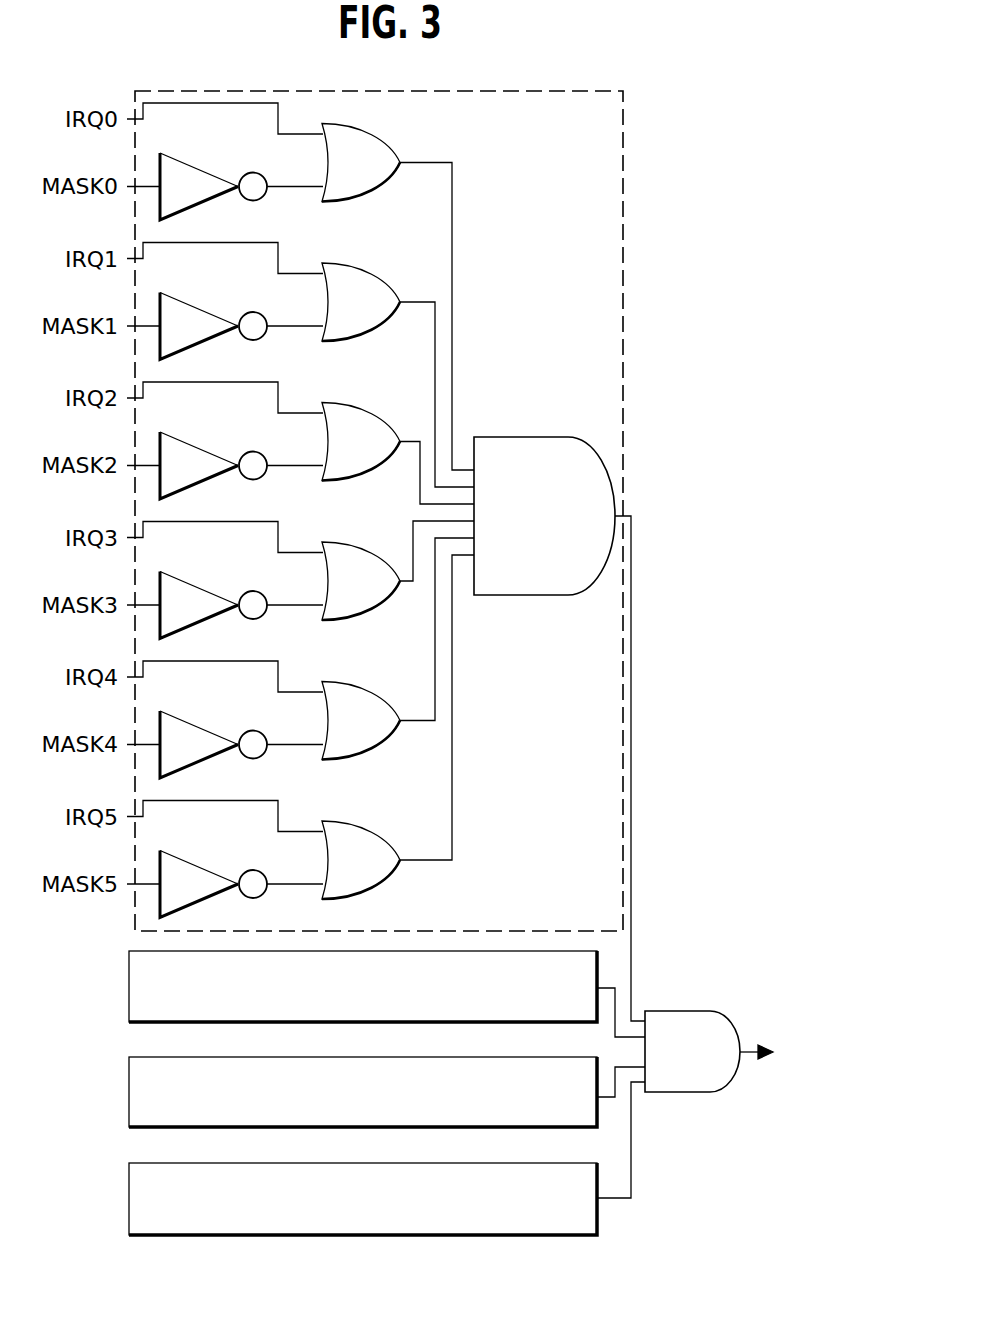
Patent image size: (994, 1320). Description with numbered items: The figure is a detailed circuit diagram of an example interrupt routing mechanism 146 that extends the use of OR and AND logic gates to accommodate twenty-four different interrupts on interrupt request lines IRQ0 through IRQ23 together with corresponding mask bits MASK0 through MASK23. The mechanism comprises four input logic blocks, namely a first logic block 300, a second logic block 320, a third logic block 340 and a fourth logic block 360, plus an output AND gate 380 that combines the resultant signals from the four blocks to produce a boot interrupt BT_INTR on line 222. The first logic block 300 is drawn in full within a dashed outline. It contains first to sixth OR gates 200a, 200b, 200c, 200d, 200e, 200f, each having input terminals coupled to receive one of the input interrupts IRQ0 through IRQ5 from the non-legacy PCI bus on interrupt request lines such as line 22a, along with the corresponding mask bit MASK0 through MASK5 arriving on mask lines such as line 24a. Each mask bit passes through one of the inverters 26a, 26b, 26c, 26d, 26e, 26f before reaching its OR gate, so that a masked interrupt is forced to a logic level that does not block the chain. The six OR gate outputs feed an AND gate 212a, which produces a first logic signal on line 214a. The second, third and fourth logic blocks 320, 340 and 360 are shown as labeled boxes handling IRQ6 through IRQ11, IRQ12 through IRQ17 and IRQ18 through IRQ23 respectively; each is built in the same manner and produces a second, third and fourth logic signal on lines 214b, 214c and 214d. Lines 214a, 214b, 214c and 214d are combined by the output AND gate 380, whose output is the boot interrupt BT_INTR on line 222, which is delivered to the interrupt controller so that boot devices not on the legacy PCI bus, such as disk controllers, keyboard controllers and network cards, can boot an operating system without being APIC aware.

The interrupt routing mechanism 146 is at (686, 123).
The first logic block 300 is at (570, 90).
The interrupt request line 22a is at (172, 103).
The mask bit line 24a is at (143, 180).
The inverter 26a is at (200, 162).
The inverter 26b is at (241, 316).
The inverter 26c is at (241, 455).
The inverter 26d is at (241, 595).
The inverter 26e is at (241, 734).
The inverter 26f is at (241, 874).
The first OR gate 200a is at (351, 123).
The second OR gate 200b is at (381, 362).
The third OR gate 200c is at (381, 440).
The fourth OR gate 200d is at (381, 568).
The fifth OR gate 200e is at (381, 649).
The sixth OR gate 200f is at (381, 727).
The AND gate 212a is at (503, 437).
The first logic signal line 214a is at (633, 818).
The second logic signal line 214b is at (612, 1013).
The third logic signal line 214c is at (606, 1100).
The fourth logic signal line 214d is at (633, 1180).
The second logic block 320 is at (129, 983).
The third logic block 340 is at (129, 1091).
The fourth logic block 360 is at (129, 1191).
The output AND gate 380 is at (700, 1011).
The boot interrupt line 222 is at (746, 1057).